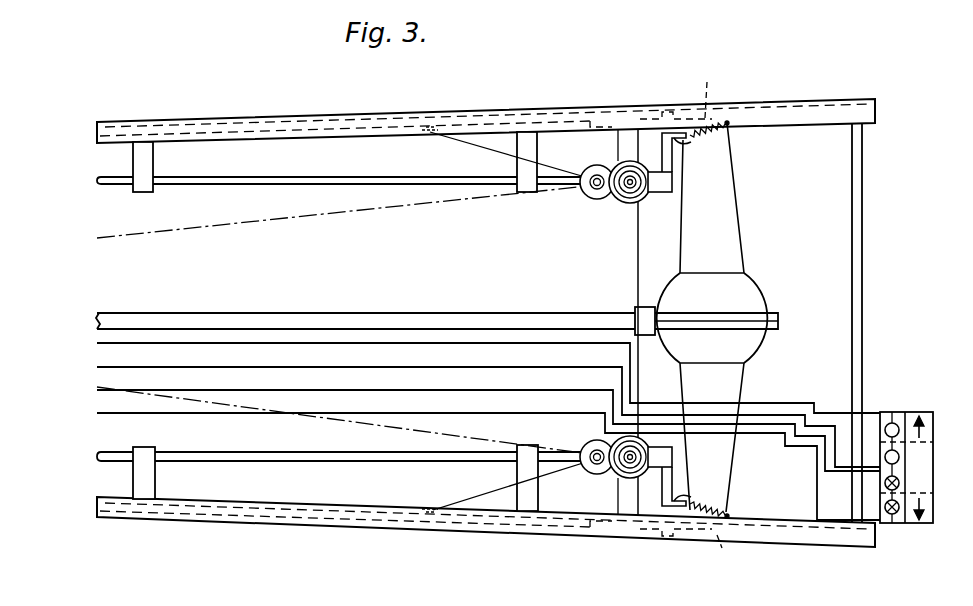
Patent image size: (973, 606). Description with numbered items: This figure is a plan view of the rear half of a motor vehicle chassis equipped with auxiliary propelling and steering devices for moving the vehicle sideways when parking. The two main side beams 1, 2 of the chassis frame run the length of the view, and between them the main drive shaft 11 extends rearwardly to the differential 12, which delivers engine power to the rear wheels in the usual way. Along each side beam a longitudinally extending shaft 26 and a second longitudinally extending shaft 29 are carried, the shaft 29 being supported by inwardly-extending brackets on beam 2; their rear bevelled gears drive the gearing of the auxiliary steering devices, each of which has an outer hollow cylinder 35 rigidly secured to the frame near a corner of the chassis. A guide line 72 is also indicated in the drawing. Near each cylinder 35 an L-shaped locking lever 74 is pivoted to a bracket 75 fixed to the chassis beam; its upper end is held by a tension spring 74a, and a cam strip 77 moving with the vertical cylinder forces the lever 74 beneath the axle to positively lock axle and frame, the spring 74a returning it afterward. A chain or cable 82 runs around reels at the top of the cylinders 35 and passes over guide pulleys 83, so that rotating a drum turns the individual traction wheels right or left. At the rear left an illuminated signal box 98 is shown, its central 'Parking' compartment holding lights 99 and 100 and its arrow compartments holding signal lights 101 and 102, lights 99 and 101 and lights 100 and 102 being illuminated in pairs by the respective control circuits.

The main side beam 1 is at (826, 106).
The main side beam 2 is at (813, 536).
The main drive shaft 11 is at (482, 314).
The differential 12 is at (755, 300).
The longitudinally extending shaft 26 is at (314, 178).
The second longitudinally extending shaft 29 is at (289, 461).
The outer hollow cylinder 35 is at (668, 192).
The guide line 72 is at (287, 222).
The L-shaped locking lever 74 is at (692, 142).
The tension spring 74a is at (720, 124).
The bracket 75 is at (721, 315).
The cam strip 77 is at (670, 179).
The chain or cable 82 is at (233, 124).
The guide pulley 83 is at (429, 134).
The illuminated signal box 98 is at (896, 460).
The light 99 is at (885, 457).
The light 100 is at (886, 488).
The signal light 101 is at (891, 422).
The signal light 102 is at (894, 514).